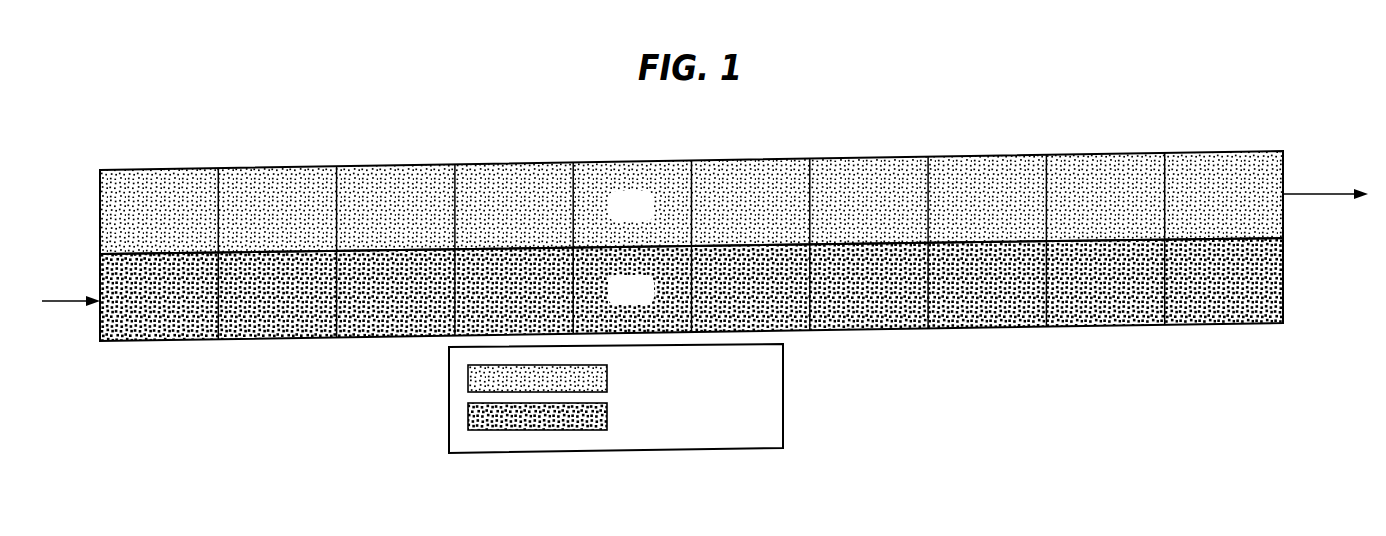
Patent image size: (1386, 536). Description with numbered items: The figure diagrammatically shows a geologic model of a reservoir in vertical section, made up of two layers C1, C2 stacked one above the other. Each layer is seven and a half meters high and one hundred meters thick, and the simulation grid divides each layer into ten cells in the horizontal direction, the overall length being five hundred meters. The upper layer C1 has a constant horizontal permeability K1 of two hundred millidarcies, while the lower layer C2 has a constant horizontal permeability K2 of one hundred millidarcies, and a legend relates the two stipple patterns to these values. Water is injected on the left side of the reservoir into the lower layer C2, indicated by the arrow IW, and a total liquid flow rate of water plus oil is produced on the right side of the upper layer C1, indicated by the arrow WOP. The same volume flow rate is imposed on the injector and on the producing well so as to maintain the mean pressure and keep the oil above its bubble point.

The upper layer C1 is at (171, 160).
The lower layer C2 is at (176, 355).
The horizontal permeability of the upper layer K1 is at (618, 291).
The horizontal permeability of the lower layer K2 is at (618, 352).
The injection well / injected water inlet IW is at (71, 285).
The water/oil production outlet WOP is at (1325, 179).